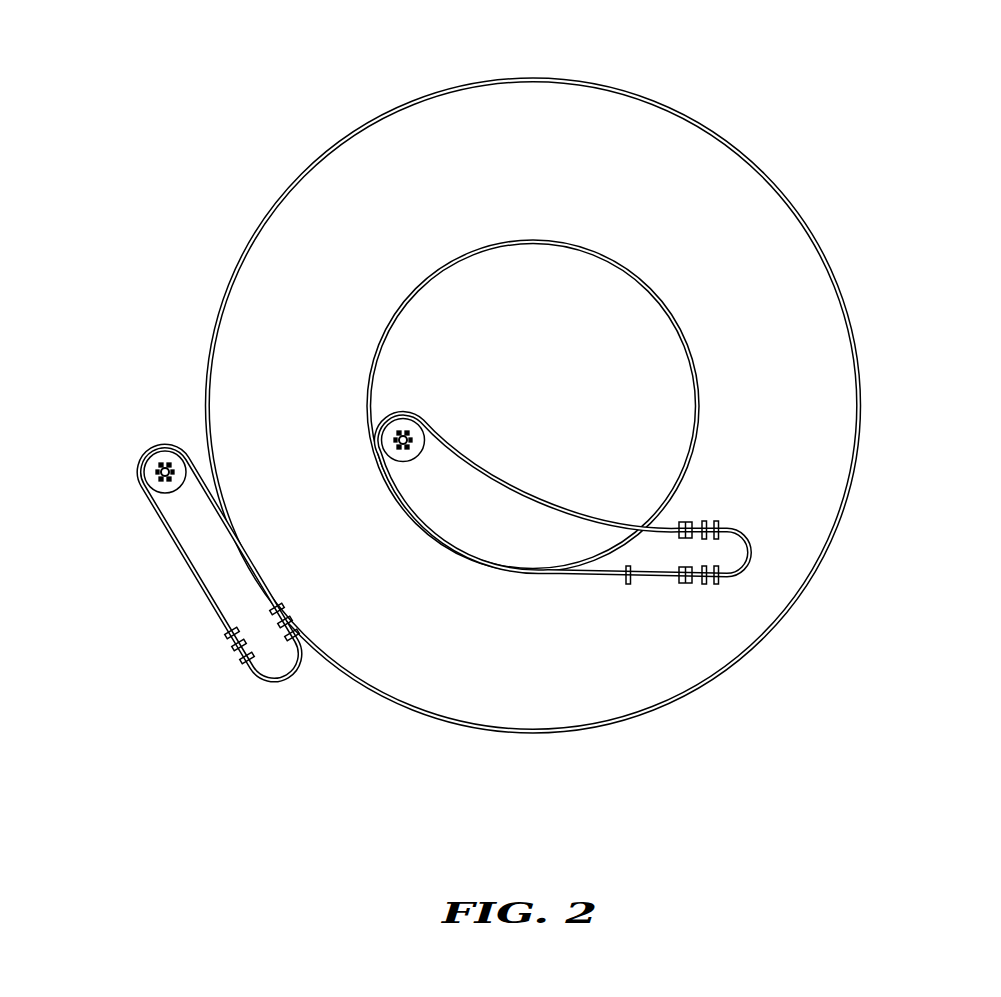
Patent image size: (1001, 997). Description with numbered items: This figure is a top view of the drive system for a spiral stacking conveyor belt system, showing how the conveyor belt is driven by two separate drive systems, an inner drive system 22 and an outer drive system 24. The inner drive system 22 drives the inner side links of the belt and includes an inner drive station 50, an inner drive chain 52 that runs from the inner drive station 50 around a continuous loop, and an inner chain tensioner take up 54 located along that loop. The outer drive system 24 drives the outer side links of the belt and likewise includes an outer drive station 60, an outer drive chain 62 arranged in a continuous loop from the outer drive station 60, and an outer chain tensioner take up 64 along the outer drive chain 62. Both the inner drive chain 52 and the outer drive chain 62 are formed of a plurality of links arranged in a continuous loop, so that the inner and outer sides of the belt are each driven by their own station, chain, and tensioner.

The inner drive system 22 is at (533, 376).
The outer drive system 24 is at (533, 375).
The inner drive station 50 is at (498, 412).
The inner drive chain 52 is at (583, 524).
The inner chain tensioner take up 54 is at (810, 539).
The outer drive station 60 is at (106, 441).
The outer drive chain 62 is at (197, 558).
The outer chain tensioner take up 64 is at (221, 685).